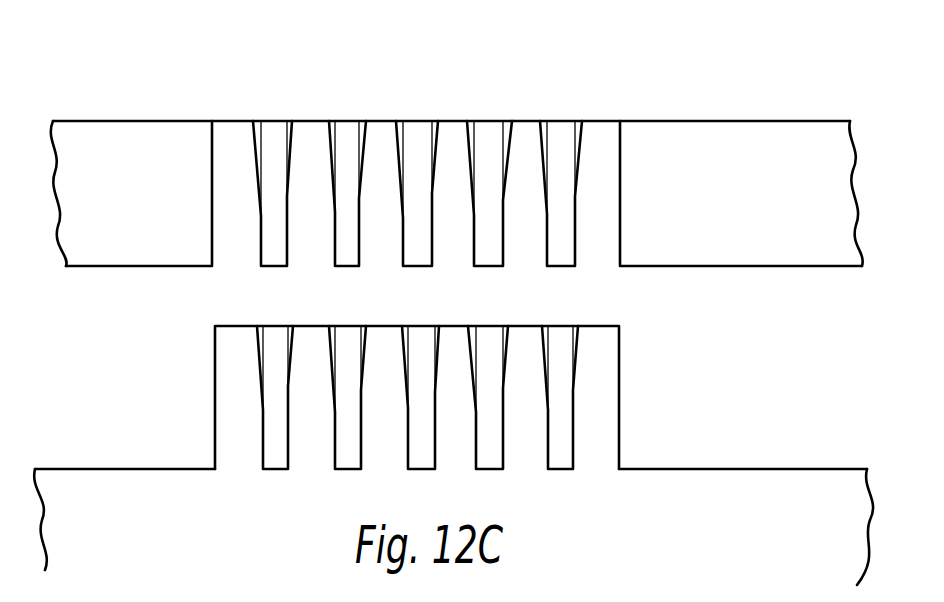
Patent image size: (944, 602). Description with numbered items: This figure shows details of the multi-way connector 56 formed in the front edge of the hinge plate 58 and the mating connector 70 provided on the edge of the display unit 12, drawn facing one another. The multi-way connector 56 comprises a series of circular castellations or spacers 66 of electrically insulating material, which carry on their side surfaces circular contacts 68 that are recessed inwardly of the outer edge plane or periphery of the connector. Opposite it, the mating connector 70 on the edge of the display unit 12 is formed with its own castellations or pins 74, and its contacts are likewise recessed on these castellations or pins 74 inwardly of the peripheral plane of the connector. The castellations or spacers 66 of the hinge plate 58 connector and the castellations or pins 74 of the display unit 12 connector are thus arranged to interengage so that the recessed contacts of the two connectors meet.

The display unit 12 is at (692, 554).
The multi-way connector 56 is at (606, 283).
The hinge plate 58 is at (498, 50).
The castellations or spacers 66 is at (557, 242).
The circular contacts 68 is at (325, 149).
The mating connector 70 is at (646, 407).
The castellations or pins 74 is at (330, 318).